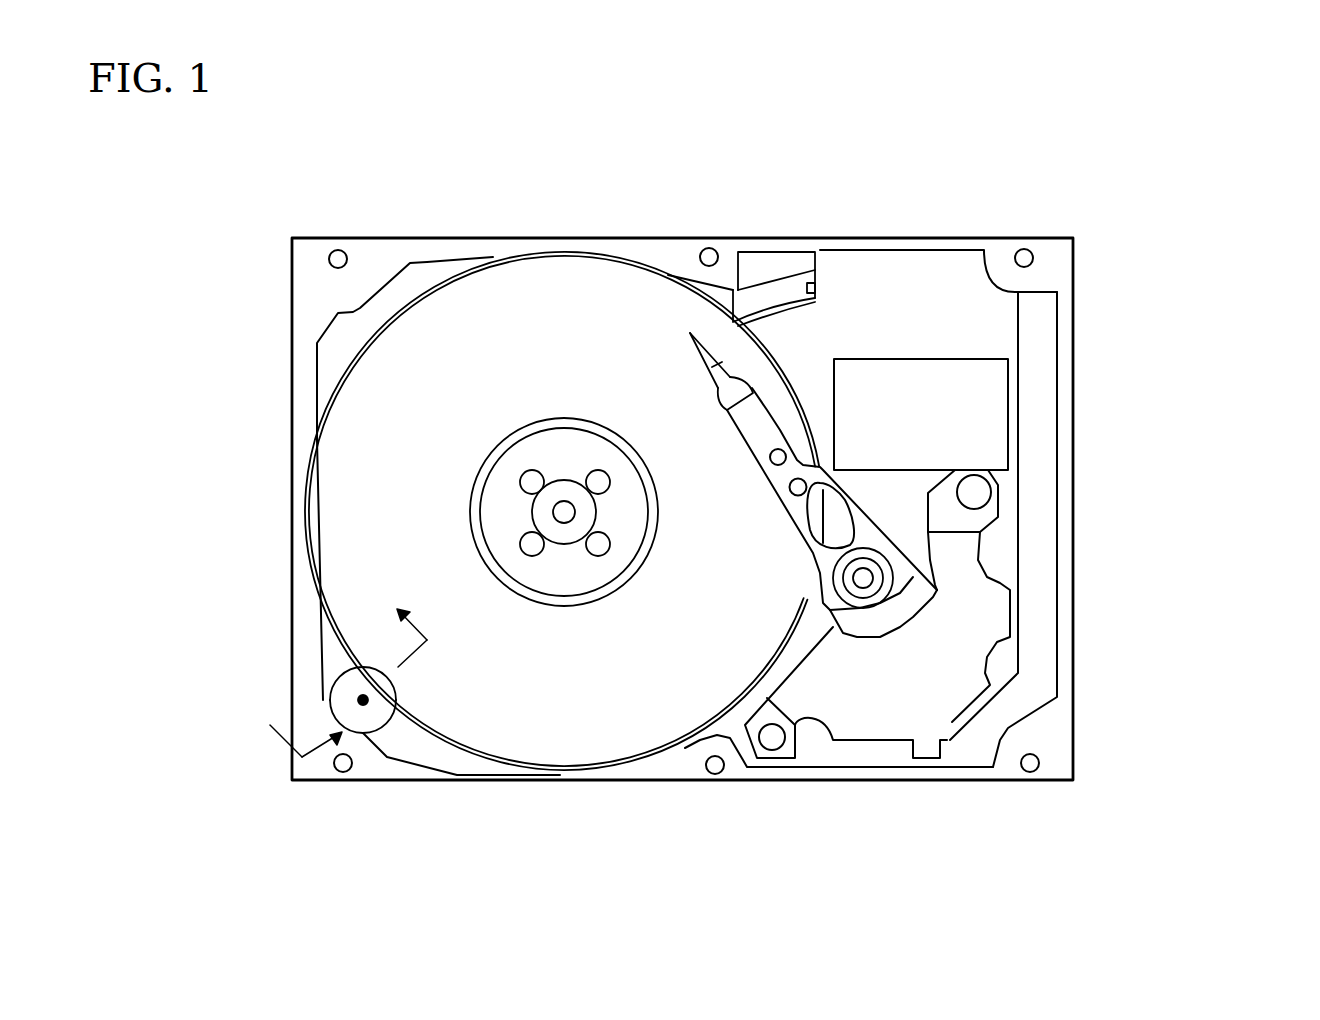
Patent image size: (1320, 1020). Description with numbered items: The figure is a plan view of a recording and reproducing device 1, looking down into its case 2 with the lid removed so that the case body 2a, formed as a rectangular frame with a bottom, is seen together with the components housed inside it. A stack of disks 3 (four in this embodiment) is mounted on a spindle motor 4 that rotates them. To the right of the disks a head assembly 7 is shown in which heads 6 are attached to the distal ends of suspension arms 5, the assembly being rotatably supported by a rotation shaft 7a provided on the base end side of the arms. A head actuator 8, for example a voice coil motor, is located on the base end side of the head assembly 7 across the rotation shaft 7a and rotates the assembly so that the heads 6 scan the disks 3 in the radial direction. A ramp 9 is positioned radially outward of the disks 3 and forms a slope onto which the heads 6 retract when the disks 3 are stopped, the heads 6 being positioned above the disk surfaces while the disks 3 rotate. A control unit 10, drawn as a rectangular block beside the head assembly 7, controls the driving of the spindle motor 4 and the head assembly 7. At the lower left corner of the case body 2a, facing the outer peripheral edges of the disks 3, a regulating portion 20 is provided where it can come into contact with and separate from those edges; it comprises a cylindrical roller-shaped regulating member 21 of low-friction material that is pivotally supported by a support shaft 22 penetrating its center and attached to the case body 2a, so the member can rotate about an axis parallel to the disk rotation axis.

The recording and reproducing device 1 is at (349, 166).
The case 2 is at (512, 238).
The case body 2a is at (1073, 718).
The disk 3 is at (583, 298).
The spindle motor 4 is at (564, 520).
The suspension arm 5 is at (777, 490).
The head 6 is at (690, 330).
The head assembly 7 is at (755, 383).
The rotation shaft 7a is at (855, 606).
The head actuator 8 is at (977, 618).
The ramp 9 is at (778, 260).
The control unit 10 is at (1009, 403).
The regulating portion 20 is at (340, 730).
The regulating member 21 is at (360, 720).
The support shaft 22 is at (360, 698).